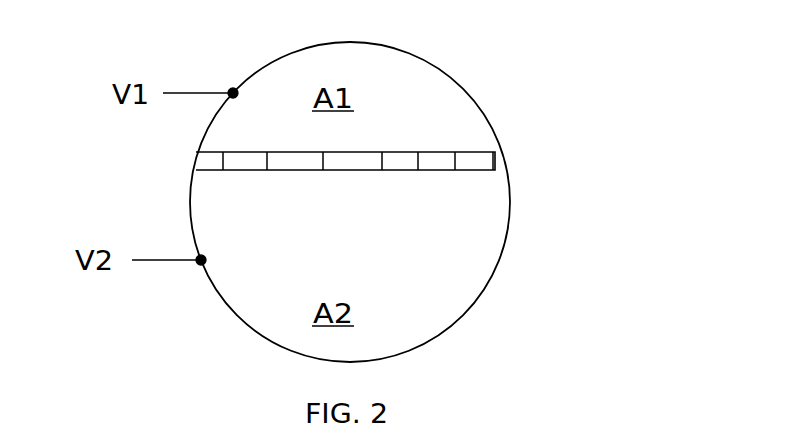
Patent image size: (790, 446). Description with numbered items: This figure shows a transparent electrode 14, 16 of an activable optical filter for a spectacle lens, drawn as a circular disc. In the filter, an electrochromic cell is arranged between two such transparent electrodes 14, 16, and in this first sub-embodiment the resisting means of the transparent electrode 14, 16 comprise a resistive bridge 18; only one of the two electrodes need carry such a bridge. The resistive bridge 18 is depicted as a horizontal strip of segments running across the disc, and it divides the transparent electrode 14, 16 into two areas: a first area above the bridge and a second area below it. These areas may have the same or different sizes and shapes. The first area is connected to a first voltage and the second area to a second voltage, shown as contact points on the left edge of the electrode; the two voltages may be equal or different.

The transparent electrode 14 is at (435, 202).
The transparent electrode 16 is at (498, 128).
The resistive bridge 18 is at (440, 162).